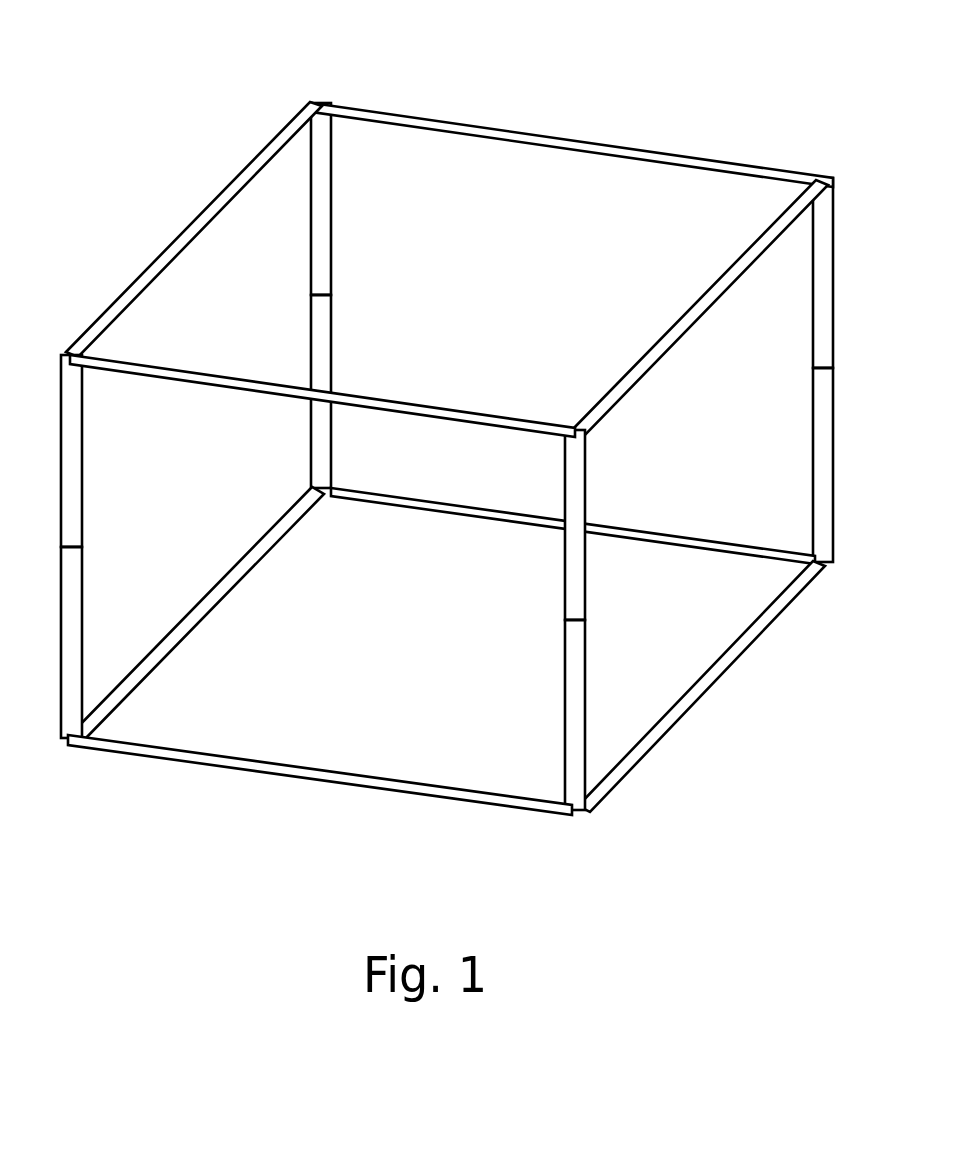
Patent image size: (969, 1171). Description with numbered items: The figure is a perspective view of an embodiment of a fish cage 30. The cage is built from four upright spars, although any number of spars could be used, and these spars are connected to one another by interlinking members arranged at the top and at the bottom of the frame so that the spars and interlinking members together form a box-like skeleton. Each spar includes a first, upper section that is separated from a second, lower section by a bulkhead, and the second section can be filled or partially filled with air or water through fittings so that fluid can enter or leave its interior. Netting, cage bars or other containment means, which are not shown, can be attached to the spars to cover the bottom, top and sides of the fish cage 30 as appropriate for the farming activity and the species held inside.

The fish cage 30 is at (517, 72).